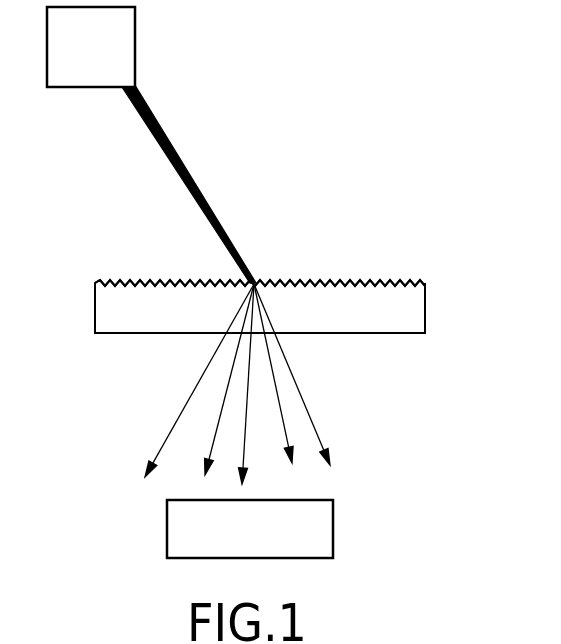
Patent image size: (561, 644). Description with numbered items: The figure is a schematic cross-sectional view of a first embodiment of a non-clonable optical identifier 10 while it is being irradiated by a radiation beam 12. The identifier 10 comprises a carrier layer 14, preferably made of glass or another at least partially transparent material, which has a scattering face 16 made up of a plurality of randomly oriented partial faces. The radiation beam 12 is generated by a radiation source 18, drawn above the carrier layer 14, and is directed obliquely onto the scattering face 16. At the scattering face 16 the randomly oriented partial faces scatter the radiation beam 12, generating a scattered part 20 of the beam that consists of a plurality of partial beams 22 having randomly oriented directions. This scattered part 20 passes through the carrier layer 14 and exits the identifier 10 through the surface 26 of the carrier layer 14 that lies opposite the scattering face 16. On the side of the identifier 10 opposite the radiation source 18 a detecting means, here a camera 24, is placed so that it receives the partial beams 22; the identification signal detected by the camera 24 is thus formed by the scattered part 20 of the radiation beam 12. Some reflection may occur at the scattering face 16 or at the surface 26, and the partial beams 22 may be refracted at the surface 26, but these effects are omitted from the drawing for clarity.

The non-clonable optical identifier 10 is at (453, 282).
The radiation beam 12 is at (168, 135).
The carrier layer 14 is at (95, 305).
The scattering face 16 is at (143, 282).
The radiation source 18 is at (135, 43).
The scattered part 20 is at (292, 384).
The partial beams 22 is at (188, 407).
The camera 24 is at (333, 530).
The surface 26 is at (107, 333).